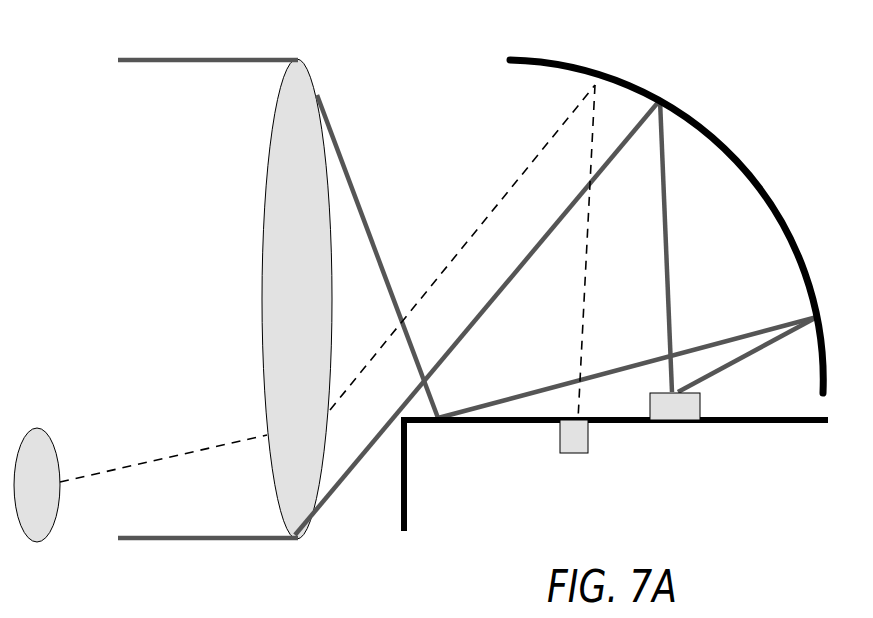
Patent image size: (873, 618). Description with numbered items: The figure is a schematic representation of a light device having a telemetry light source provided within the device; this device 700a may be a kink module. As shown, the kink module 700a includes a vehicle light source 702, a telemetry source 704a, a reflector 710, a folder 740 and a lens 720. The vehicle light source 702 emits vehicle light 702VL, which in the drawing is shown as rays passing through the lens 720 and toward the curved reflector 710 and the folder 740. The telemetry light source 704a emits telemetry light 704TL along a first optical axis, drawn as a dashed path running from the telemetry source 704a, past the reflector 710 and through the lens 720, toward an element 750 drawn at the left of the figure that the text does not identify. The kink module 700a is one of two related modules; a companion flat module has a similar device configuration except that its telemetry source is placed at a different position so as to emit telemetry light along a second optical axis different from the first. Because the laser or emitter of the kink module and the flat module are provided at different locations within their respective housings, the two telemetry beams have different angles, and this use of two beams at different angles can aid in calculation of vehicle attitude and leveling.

The kink module 700a is at (87, 37).
The vehicle light source 702 is at (673, 410).
The vehicle light 702VL is at (188, 62).
The telemetry light source 704a is at (575, 438).
The telemetry light 704TL is at (155, 453).
The reflector 710 is at (682, 110).
The lens 720 is at (318, 97).
The folder 740 is at (785, 423).
The eye of user 750 is at (32, 543).